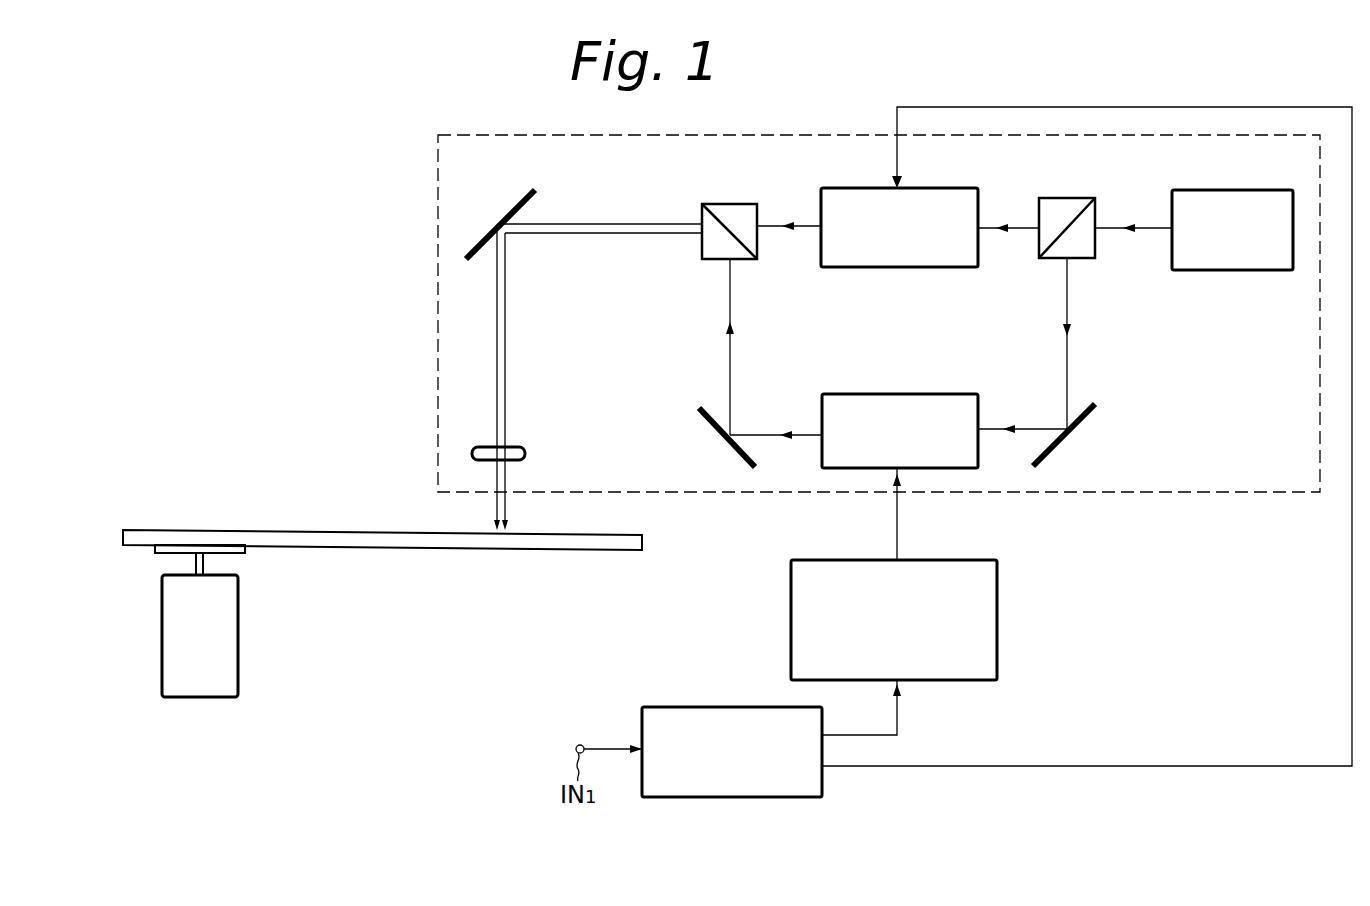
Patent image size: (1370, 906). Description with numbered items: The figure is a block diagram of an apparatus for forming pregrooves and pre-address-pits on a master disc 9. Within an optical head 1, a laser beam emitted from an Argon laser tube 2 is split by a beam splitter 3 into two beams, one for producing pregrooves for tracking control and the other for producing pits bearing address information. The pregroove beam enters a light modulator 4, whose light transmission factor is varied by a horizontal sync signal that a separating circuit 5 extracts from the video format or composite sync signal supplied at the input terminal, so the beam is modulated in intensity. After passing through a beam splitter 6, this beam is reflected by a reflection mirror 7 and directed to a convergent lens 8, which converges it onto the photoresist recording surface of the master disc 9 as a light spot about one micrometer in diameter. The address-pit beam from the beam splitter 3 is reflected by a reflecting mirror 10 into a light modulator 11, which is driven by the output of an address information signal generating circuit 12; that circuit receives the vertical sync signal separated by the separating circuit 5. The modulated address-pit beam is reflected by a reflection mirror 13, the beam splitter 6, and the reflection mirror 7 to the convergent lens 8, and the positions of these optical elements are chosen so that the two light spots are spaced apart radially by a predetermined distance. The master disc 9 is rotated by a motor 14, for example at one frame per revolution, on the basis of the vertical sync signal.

The optical head 1 is at (437, 266).
The Argon laser tube 2 is at (1236, 270).
The beam splitter 3 is at (1087, 258).
The light modulator 4 is at (940, 267).
The separating circuit 5 is at (728, 797).
The beam splitter 6 is at (755, 259).
The reflection mirror 7 is at (510, 200).
The convergent lens 8 is at (525, 456).
The master disc 9 is at (583, 550).
The reflecting mirror 10 is at (1088, 418).
The light modulator 11 is at (889, 394).
The address information signal generating circuit 12 is at (997, 632).
The reflection mirror 13 is at (727, 445).
The motor 14 is at (238, 645).